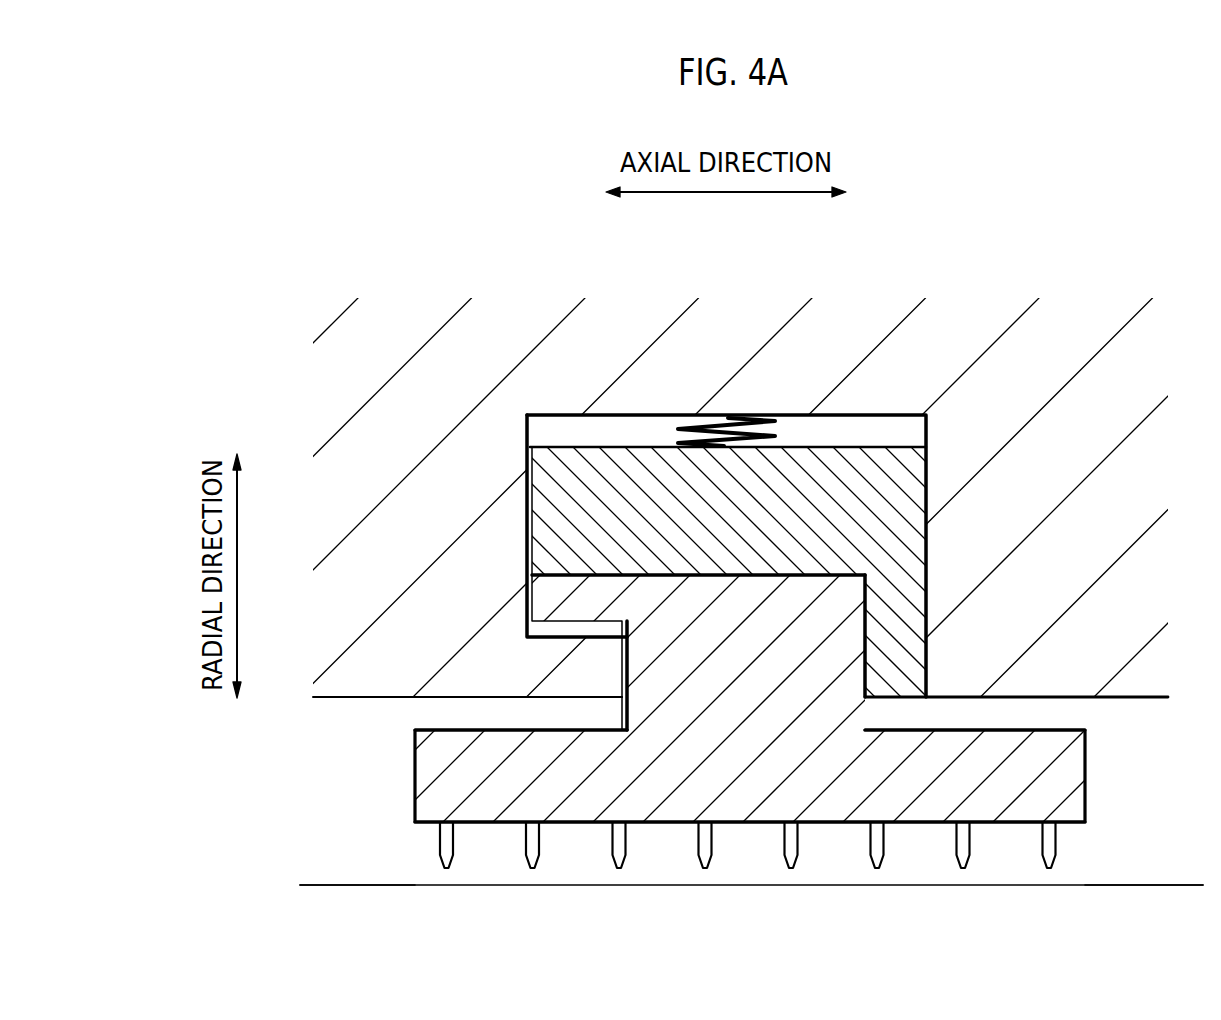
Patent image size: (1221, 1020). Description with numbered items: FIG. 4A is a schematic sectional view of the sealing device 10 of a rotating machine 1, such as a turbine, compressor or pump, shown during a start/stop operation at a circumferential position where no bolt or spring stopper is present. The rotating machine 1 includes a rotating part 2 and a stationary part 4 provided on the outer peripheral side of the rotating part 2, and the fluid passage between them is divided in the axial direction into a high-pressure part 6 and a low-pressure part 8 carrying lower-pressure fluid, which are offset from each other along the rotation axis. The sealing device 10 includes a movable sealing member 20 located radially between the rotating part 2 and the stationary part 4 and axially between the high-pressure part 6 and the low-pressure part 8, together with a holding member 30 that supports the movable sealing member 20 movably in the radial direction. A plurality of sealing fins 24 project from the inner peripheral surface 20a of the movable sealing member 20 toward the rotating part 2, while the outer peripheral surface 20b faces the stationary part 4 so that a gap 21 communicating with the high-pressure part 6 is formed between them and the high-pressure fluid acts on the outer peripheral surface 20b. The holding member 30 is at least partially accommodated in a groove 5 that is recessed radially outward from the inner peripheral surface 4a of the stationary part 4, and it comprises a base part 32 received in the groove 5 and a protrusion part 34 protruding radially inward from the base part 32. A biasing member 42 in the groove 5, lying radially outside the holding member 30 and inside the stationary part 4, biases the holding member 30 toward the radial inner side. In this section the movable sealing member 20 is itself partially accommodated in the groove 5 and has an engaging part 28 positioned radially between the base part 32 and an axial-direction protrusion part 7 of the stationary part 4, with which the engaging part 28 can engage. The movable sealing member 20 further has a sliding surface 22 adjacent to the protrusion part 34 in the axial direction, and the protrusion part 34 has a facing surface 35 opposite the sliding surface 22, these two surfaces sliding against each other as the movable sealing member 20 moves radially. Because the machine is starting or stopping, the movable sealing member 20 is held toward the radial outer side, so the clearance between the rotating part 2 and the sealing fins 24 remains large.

The rotating machine 1 is at (1129, 166).
The sealing device 10 is at (1039, 271).
The rotating part 2 is at (357, 903).
The stationary part 4 is at (437, 405).
The inner peripheral surface 4a is at (1027, 699).
The groove 5 is at (610, 415).
The high-pressure part 6 is at (336, 767).
The axial-direction protrusion part 7 is at (588, 667).
The low-pressure part 8 is at (1206, 767).
The movable sealing member 20 is at (765, 656).
The inner peripheral surface 20a is at (1068, 823).
The outer peripheral surface 20b is at (466, 728).
The gap 21 is at (502, 716).
The sliding surface 22 is at (869, 683).
The sealing fins 24 is at (443, 844).
The engaging part 28 is at (578, 600).
The holding member 30 is at (763, 518).
The base part 32 is at (890, 492).
The protrusion part 34 is at (902, 632).
The facing surface 35 is at (865, 660).
The biasing member 42 is at (705, 436).